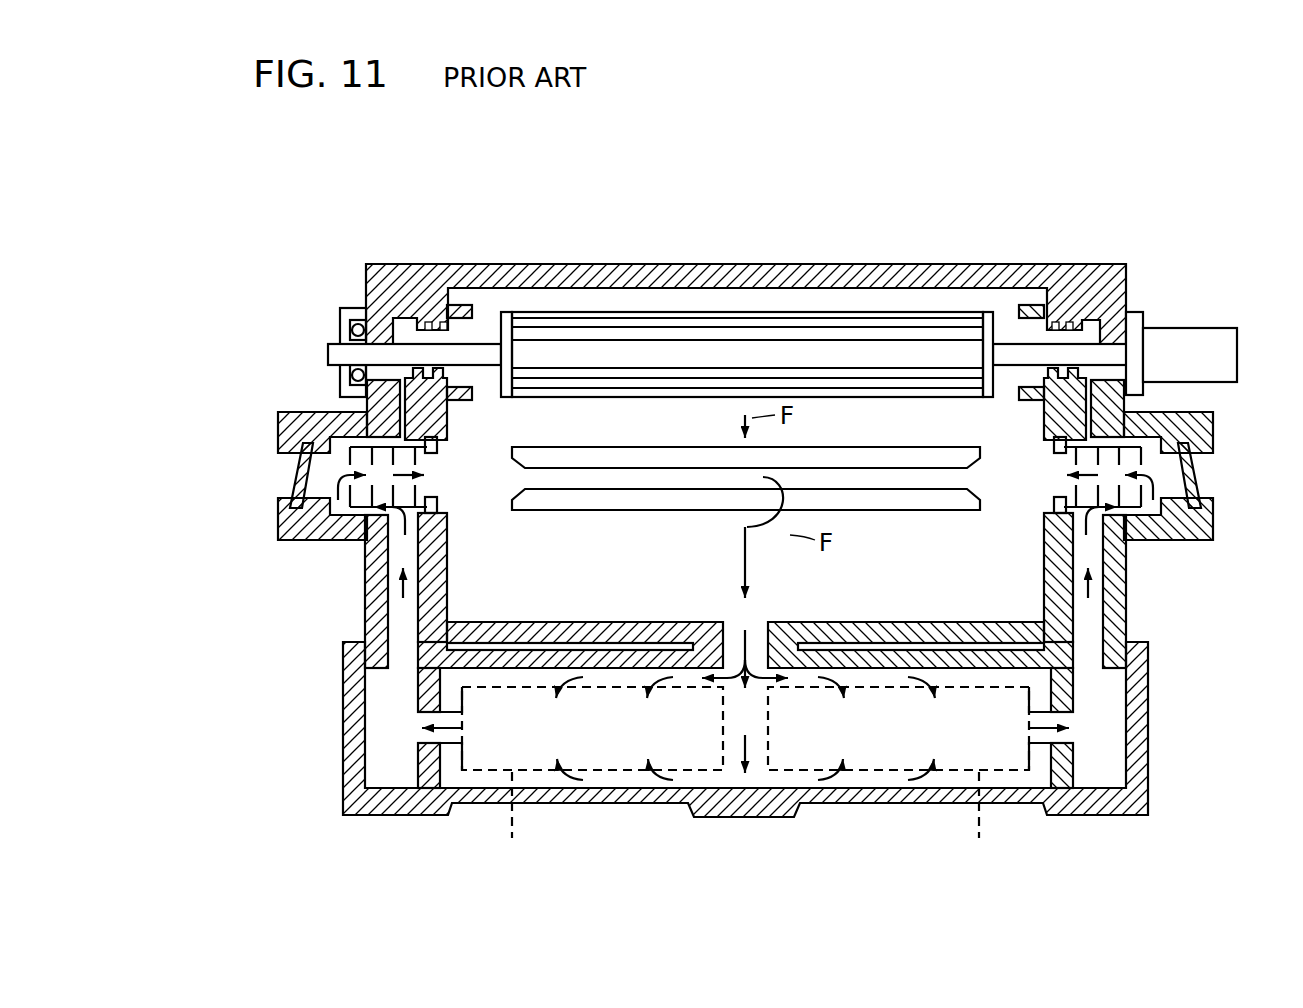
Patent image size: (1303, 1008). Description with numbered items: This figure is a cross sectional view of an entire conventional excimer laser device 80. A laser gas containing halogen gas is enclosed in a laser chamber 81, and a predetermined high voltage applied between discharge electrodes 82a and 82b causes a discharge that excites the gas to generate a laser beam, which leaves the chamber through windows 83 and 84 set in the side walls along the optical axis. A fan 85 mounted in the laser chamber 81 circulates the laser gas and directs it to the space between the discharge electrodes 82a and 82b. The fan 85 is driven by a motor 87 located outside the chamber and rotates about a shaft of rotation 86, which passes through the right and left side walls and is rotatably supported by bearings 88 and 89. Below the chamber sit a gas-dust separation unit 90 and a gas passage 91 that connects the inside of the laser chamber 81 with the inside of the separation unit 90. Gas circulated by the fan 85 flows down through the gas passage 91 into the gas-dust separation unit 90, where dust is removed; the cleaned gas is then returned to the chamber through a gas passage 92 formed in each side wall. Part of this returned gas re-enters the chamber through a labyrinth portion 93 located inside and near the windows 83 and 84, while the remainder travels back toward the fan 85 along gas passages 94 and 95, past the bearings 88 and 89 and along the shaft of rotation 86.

The centrifugal separator (prior art) 80 is at (286, 208).
The laser chamber 81 is at (486, 272).
The discharge electrode 82a is at (571, 457).
The discharge electrode 82b is at (571, 500).
The window 83 is at (300, 462).
The window 84 is at (1200, 475).
The fan 85 is at (610, 310).
The shaft of rotation 86 is at (340, 353).
The motor 87 is at (1197, 340).
The bearing 88 is at (378, 333).
The bearing 89 is at (1112, 335).
The gas-dust separation unit 90 is at (745, 775).
The gas passage 91 is at (735, 630).
The gas passage 92 is at (396, 627).
The labyrinth portion 93 is at (352, 507).
The gas passage 94 is at (367, 405).
The gas passage 95 is at (1127, 403).